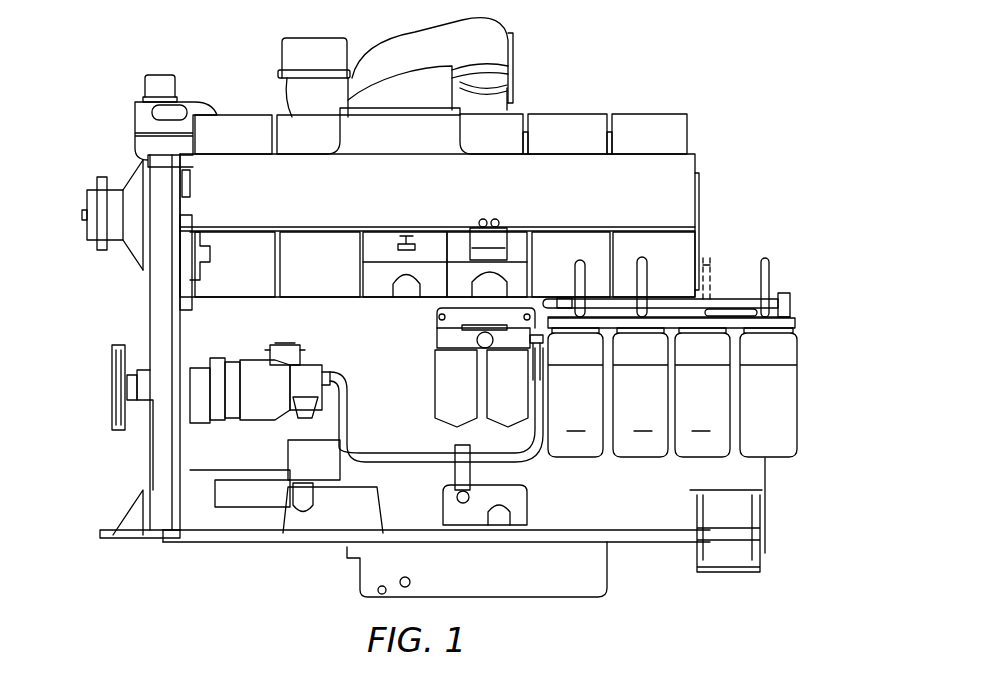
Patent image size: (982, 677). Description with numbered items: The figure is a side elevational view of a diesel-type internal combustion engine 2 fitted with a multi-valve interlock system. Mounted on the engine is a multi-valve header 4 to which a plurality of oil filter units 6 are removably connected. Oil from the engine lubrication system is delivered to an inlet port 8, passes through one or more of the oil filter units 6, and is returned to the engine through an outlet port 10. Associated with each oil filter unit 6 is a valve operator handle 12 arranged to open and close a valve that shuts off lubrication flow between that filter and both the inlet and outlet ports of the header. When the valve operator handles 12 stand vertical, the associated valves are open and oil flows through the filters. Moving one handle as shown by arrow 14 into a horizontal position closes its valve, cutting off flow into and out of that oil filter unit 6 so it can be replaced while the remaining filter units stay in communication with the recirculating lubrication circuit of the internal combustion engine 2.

The internal combustion engine 2 is at (702, 140).
The multi-valve header 4 is at (805, 312).
The oil filter unit 6 is at (778, 421).
The inlet port 8 is at (562, 298).
The outlet port 10 is at (791, 292).
The valve operator handle 12 is at (640, 258).
The arrow 14 is at (738, 283).